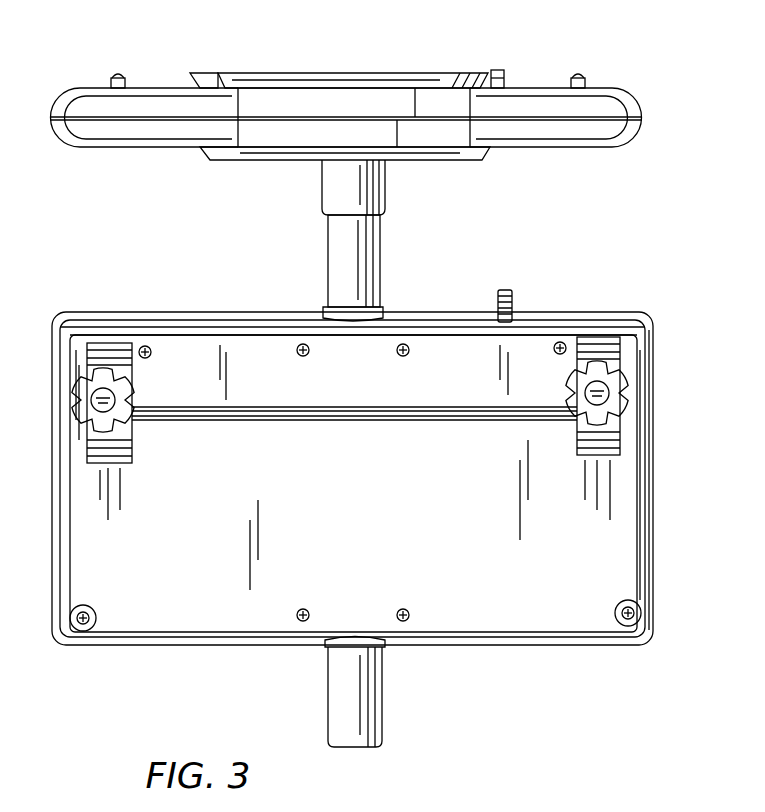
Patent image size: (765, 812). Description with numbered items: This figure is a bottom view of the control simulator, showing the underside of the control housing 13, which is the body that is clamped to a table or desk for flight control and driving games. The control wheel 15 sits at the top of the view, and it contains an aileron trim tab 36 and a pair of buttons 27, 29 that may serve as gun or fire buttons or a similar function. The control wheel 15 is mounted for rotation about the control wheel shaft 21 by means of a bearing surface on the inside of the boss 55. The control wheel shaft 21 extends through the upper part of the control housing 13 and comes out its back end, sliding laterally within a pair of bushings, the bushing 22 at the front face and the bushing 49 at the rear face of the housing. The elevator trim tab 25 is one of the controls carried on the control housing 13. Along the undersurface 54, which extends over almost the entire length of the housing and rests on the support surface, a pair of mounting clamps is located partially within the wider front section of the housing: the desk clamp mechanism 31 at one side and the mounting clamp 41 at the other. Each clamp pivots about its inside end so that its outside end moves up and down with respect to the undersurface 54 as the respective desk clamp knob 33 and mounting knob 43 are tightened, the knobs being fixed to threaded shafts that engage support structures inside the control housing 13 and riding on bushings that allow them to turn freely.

The control housing 13 is at (653, 500).
The control wheel 15 is at (332, 73).
The control wheel shaft 21 is at (355, 274).
The bushing 22 is at (383, 310).
The elevator trim tab 25 is at (508, 290).
The button 27 is at (578, 76).
The button 29 is at (120, 76).
The desk clamp mechanism 31 is at (133, 448).
The desk clamp knob 33 is at (133, 392).
The aileron trim tab 36 is at (498, 70).
The mounting clamp 41 is at (620, 440).
The mounting knob 43 is at (632, 385).
The bushing 49 is at (385, 650).
The undersurface 54 is at (452, 462).
The boss 55 is at (366, 188).